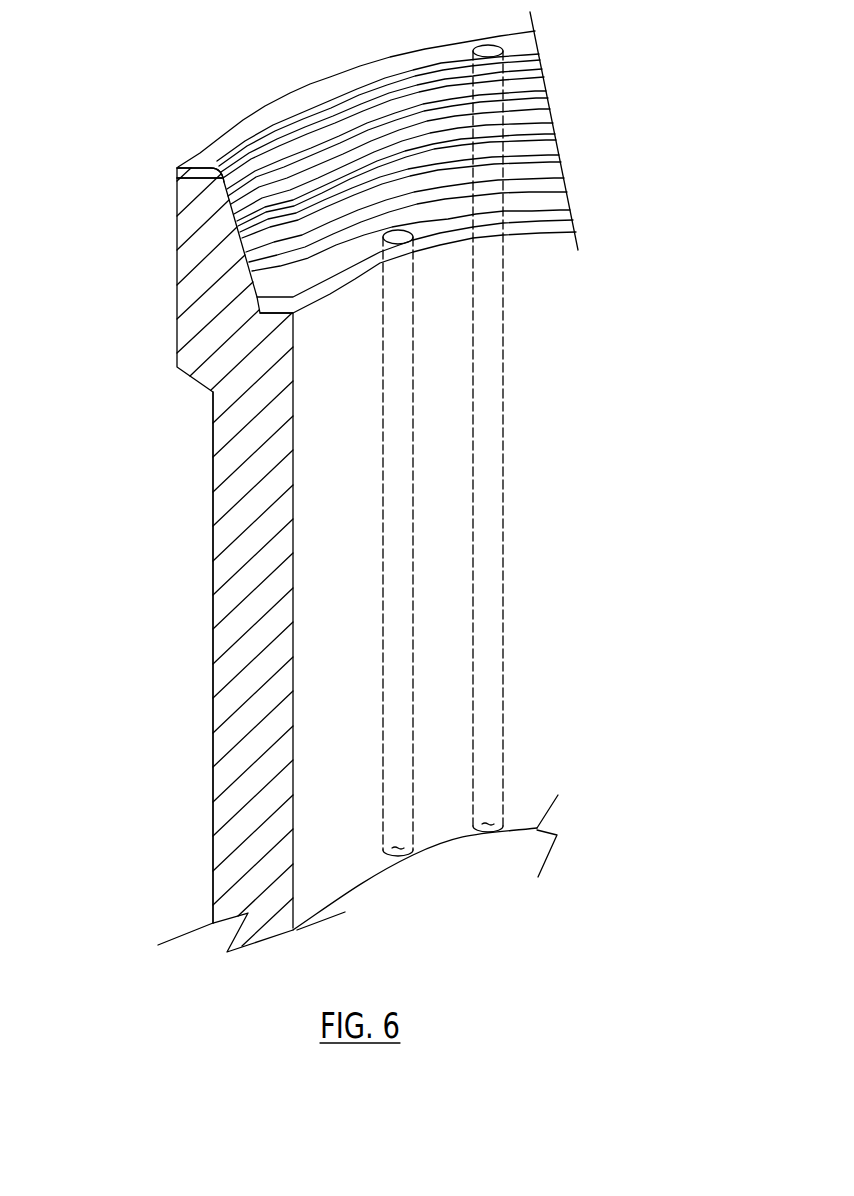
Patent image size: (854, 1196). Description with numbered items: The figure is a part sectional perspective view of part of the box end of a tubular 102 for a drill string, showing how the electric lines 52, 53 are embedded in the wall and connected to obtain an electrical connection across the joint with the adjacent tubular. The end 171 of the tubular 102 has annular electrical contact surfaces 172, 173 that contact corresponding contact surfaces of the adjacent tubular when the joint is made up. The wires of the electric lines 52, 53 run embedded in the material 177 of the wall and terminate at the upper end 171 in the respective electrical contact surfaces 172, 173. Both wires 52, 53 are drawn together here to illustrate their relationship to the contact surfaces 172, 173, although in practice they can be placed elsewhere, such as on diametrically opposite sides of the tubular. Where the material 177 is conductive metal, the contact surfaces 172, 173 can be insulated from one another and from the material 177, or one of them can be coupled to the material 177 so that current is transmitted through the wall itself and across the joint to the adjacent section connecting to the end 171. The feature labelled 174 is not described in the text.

The end of the tubular 171 is at (133, 355).
The annular electrical contact surface 172 is at (253, 113).
The annular electrical contact surface 173 is at (557, 203).
The flange 174 is at (227, 212).
The material of the wall 177 is at (257, 482).
The tubular 102 is at (213, 622).
The electric line 52 is at (543, 117).
The electric line 53 is at (413, 773).